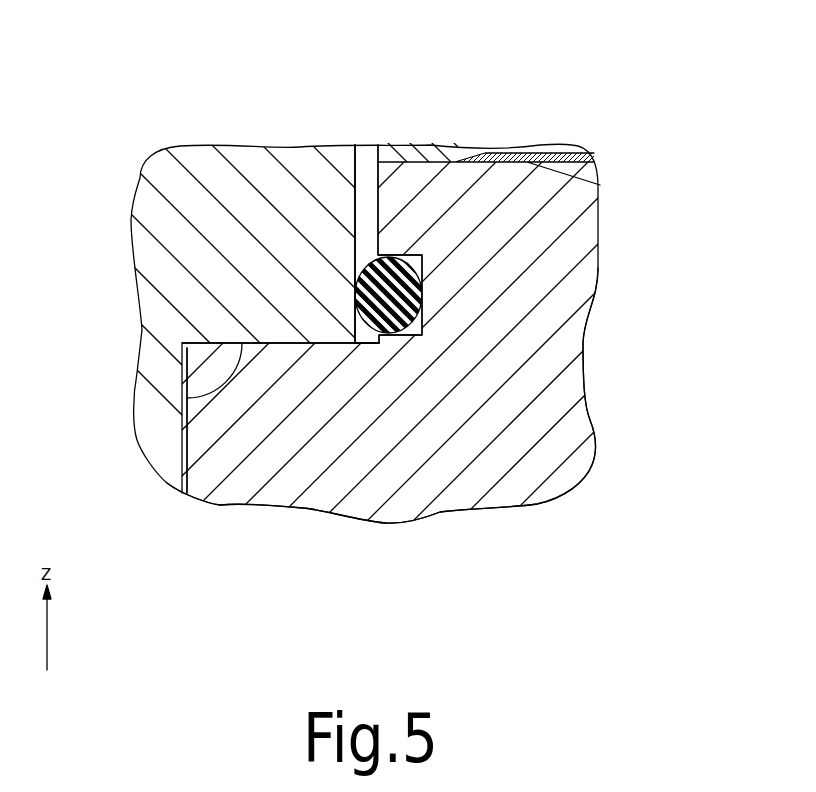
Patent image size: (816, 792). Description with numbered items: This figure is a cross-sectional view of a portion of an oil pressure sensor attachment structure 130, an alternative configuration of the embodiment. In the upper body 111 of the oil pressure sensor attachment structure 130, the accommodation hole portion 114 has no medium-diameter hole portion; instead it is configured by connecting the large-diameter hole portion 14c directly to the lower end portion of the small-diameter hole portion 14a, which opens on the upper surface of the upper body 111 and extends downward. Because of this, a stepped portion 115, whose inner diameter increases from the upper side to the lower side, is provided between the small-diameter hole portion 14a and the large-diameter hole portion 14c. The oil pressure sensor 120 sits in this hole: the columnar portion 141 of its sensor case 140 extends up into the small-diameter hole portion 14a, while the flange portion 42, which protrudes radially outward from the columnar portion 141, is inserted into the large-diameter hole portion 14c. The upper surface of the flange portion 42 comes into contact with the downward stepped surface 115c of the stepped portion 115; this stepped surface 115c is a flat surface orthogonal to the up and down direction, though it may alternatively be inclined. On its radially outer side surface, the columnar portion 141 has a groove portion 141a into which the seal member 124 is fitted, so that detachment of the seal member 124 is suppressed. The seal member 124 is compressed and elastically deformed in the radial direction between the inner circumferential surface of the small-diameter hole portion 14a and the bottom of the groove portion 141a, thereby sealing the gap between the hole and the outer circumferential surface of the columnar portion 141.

The oil pressure sensor attachment structure 130 is at (410, 103).
The upper body 111 is at (190, 202).
The accommodation hole portion 114 is at (335, 62).
The large-diameter hole portion 14c is at (229, 382).
The small-diameter hole portion 14a is at (357, 211).
The sensor case 140 is at (599, 172).
The columnar portion 141 is at (528, 215).
The groove portion 141a is at (418, 328).
The seal member 124 is at (390, 293).
The stepped portion 115 is at (353, 352).
The stepped surface 115c is at (288, 345).
The flange portion 42 is at (232, 453).
The oil pressure sensor 120 is at (484, 520).